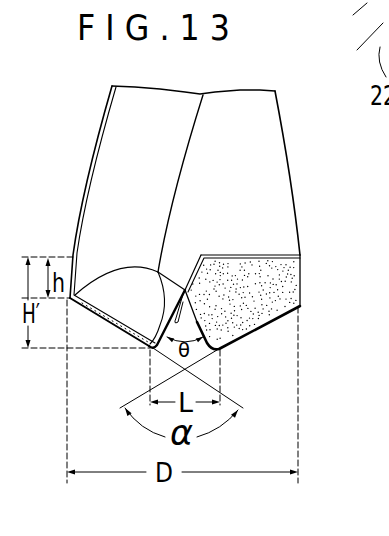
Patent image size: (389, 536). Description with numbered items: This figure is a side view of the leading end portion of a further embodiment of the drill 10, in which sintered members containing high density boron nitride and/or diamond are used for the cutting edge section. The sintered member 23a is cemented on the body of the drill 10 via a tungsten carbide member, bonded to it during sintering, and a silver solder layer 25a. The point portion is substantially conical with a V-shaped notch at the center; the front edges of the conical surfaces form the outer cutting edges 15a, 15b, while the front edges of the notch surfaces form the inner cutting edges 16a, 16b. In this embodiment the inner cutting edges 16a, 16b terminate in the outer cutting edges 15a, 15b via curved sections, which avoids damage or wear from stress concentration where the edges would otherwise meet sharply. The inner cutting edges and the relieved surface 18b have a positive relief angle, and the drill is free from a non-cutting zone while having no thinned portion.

The drill 10 is at (83, 155).
The outer cutting edge 15a is at (273, 323).
The outer cutting edge 15b is at (103, 320).
The inner cutting edge 16a is at (184, 289).
The inner cutting edge 16b is at (158, 272).
The relieved surface 18b is at (152, 315).
The sintered member 23a is at (237, 313).
The silver solder layer 25a is at (270, 254).